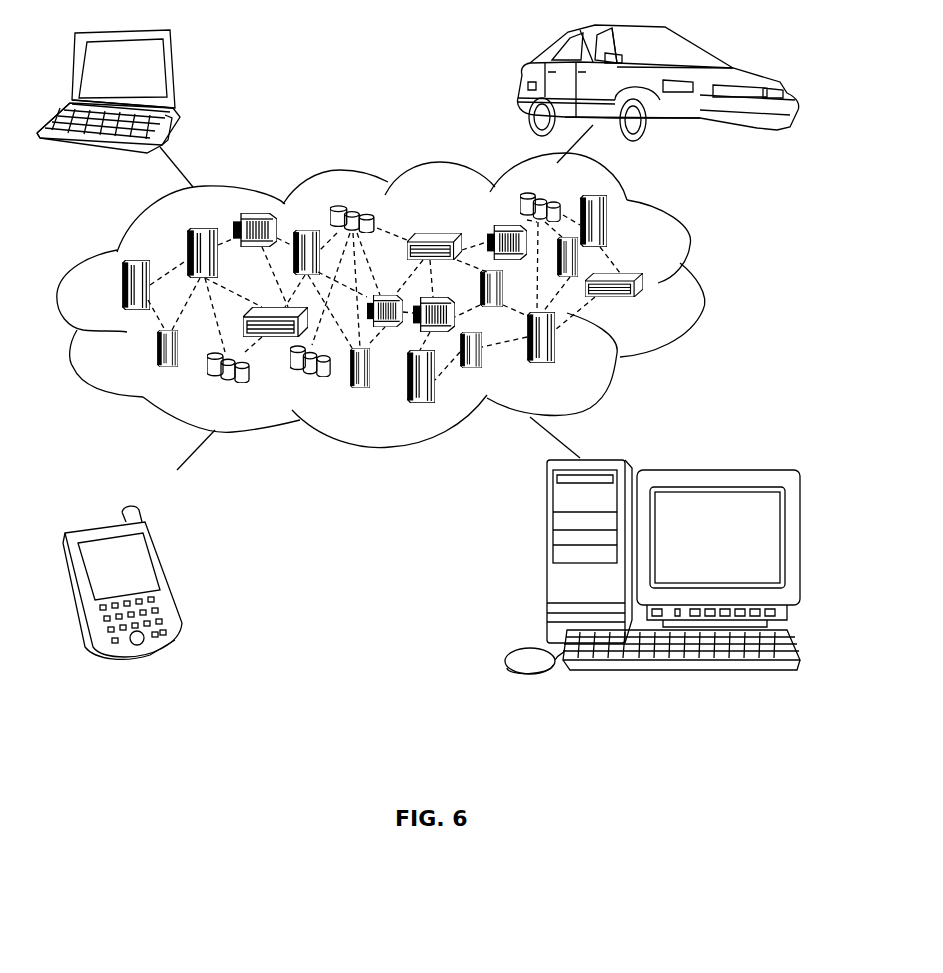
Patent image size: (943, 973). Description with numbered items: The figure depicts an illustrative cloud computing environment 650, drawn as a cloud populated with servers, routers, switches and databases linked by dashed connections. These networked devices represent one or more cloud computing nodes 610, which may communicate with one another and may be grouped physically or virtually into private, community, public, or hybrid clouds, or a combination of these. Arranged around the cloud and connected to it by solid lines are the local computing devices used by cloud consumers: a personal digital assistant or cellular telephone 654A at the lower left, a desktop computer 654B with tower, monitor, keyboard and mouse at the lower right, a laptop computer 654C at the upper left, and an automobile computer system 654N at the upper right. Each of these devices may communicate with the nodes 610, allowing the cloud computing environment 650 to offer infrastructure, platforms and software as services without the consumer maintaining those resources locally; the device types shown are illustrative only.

The cloud computing environment 650 is at (683, 252).
The cloud computing nodes 610 is at (672, 307).
The personal digital assistant (PDA) or cellular telephone 654A is at (168, 578).
The desktop computer 654B is at (547, 562).
The laptop computer 654C is at (178, 76).
The automobile computer system 654N is at (527, 78).